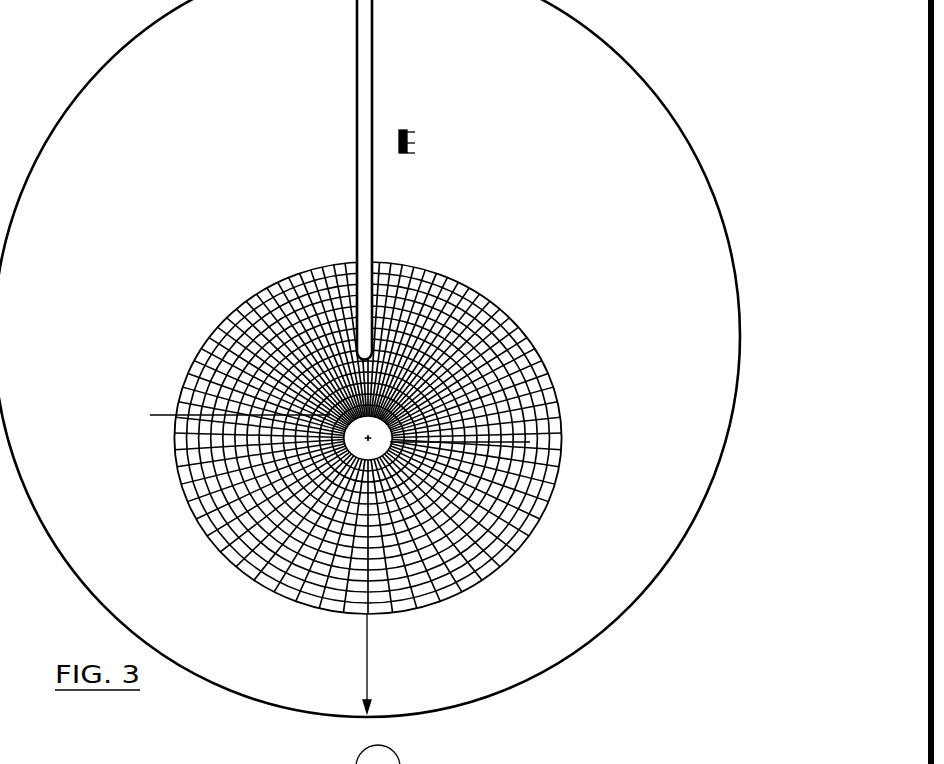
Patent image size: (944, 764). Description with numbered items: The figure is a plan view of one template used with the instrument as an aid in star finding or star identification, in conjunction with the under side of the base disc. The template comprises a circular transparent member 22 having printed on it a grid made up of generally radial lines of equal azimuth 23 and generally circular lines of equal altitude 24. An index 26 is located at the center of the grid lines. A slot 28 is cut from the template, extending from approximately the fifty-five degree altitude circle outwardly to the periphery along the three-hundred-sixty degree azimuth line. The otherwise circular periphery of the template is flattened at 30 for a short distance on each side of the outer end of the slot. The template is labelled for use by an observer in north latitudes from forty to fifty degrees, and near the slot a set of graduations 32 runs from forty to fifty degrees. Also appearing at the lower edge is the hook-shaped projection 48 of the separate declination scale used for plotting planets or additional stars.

The circular transparent member 22 is at (578, 52).
The lines of equal azimuth 23 is at (488, 564).
The lines of equal altitude 24 is at (168, 445).
The index 26 is at (370, 700).
The slot 28 is at (372, 38).
The flattened periphery portion 30 is at (280, 0).
The graduations 32 is at (438, 123).
The hook-shaped projection 48 is at (386, 763).